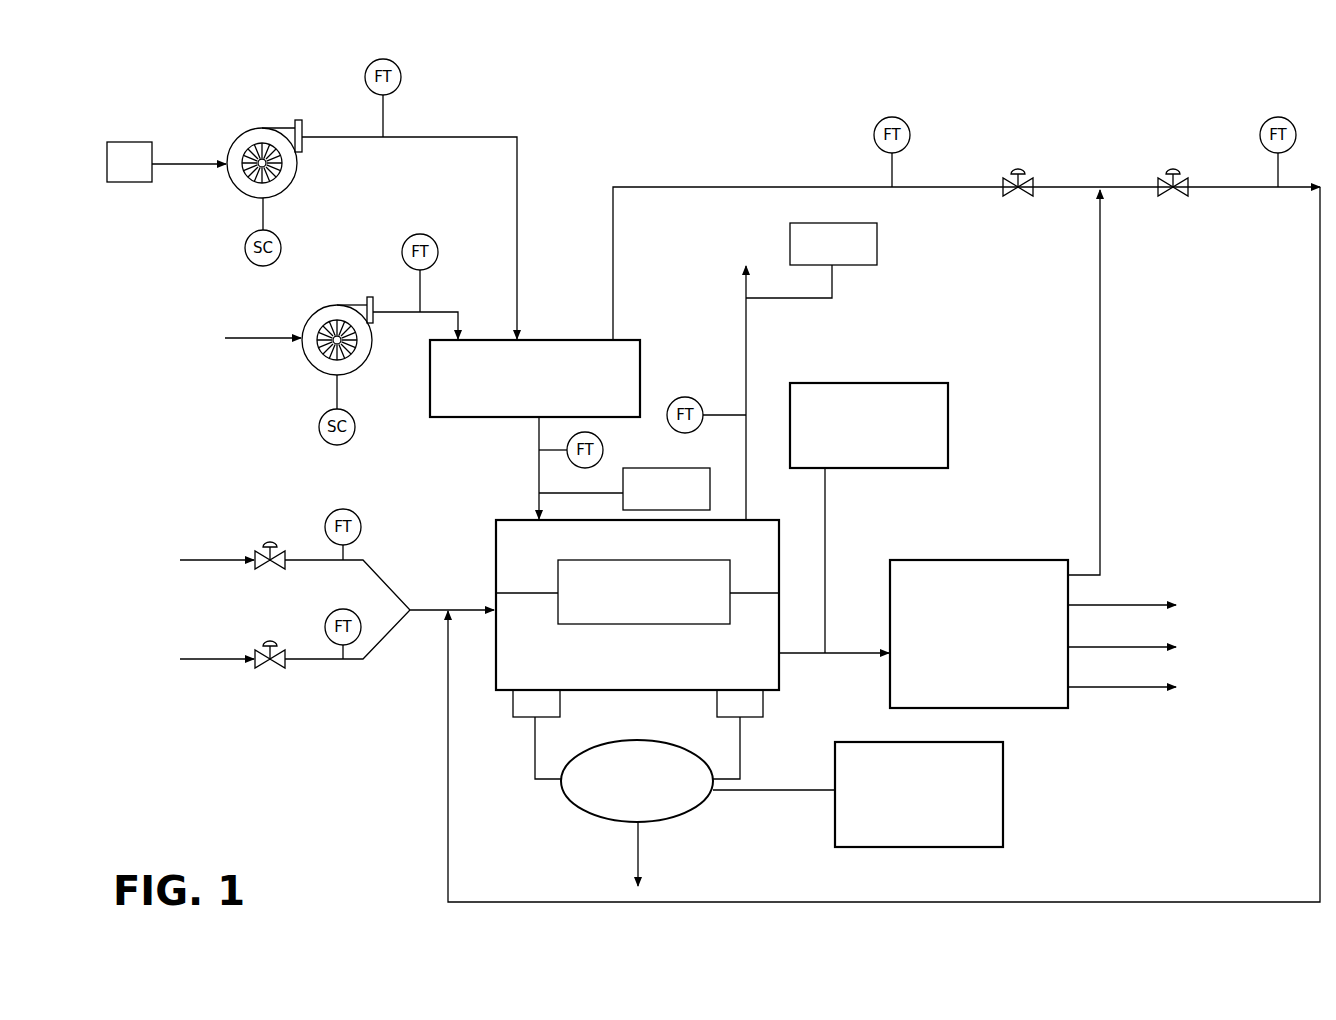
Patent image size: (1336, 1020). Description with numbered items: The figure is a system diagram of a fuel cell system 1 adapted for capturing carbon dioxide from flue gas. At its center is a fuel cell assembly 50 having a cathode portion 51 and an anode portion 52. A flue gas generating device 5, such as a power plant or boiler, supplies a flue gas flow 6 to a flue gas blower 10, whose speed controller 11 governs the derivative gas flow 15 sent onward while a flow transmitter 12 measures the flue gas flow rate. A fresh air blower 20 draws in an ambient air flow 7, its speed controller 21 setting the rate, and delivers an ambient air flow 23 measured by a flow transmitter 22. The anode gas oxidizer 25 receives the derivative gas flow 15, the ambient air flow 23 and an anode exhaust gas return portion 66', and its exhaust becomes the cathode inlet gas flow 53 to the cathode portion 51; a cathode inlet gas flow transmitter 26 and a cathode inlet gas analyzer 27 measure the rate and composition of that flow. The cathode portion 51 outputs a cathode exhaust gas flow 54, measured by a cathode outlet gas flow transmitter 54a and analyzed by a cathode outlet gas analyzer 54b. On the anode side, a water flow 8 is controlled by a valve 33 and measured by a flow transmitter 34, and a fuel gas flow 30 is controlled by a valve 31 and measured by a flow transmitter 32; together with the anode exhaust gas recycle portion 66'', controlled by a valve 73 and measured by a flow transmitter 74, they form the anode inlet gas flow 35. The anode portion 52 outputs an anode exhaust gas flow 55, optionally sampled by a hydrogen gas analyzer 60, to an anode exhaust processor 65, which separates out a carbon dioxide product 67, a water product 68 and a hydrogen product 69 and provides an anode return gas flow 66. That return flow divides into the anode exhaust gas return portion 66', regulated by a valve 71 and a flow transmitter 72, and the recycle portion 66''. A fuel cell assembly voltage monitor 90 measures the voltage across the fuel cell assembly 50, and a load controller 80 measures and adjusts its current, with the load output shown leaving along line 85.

The fuel cell system 1 is at (76, 59).
The flue gas generating device 5 is at (125, 183).
The flue gas flow 6 is at (178, 163).
The ambient air flow 7 is at (258, 340).
The water flow 8 is at (200, 560).
The flue gas blower 10 is at (275, 128).
The speed controller 11 is at (246, 252).
The flow transmitter 12 is at (401, 77).
The derivative gas flow 15 is at (519, 181).
The fresh air blower 20 is at (357, 374).
The speed controller 21 is at (319, 431).
The flow transmitter 22 is at (420, 234).
The ambient air flow 23 is at (458, 322).
The anode gas oxidizer 25 is at (535, 378).
The cathode inlet gas flow transmitter 26 is at (603, 450).
The cathode inlet gas analyzer 27 is at (624, 489).
The fuel gas flow 30 is at (200, 659).
The valve 31 is at (262, 650).
The flow transmitter 32 is at (336, 610).
The valve 33 is at (264, 551).
The flow transmitter 34 is at (351, 511).
The anode inlet gas flow 35 is at (461, 610).
The fuel cell assembly 50 is at (637, 618).
The cathode portion 51 is at (637, 569).
The anode portion 52 is at (520, 633).
The cathode inlet gas flow 53 is at (539, 470).
The cathode exhaust gas flow 54 is at (748, 343).
The cathode outlet gas flow transmitter 54a is at (686, 397).
The cathode outlet gas analyzer 54b is at (833, 244).
The anode exhaust gas flow 55 is at (850, 653).
The hydrogen gas analyzer 60 is at (869, 518).
The anode exhaust processor 65 is at (979, 634).
The anode return gas flow 66 is at (1121, 382).
The anode exhaust gas return portion 66' is at (966, 222).
The anode exhaust gas recycle portion 66'' is at (884, 544).
The carbon dioxide product 67 is at (1118, 605).
The water product 68 is at (1147, 647).
The hydrogen product 69 is at (1125, 687).
The valve 71 is at (1018, 173).
The flow transmitter 72 is at (892, 117).
The valve 73 is at (1173, 173).
The flow transmitter 74 is at (1278, 117).
The load controller 80 is at (685, 769).
The power output line 85 is at (632, 861).
The fuel cell assembly voltage monitor 90 is at (919, 794).